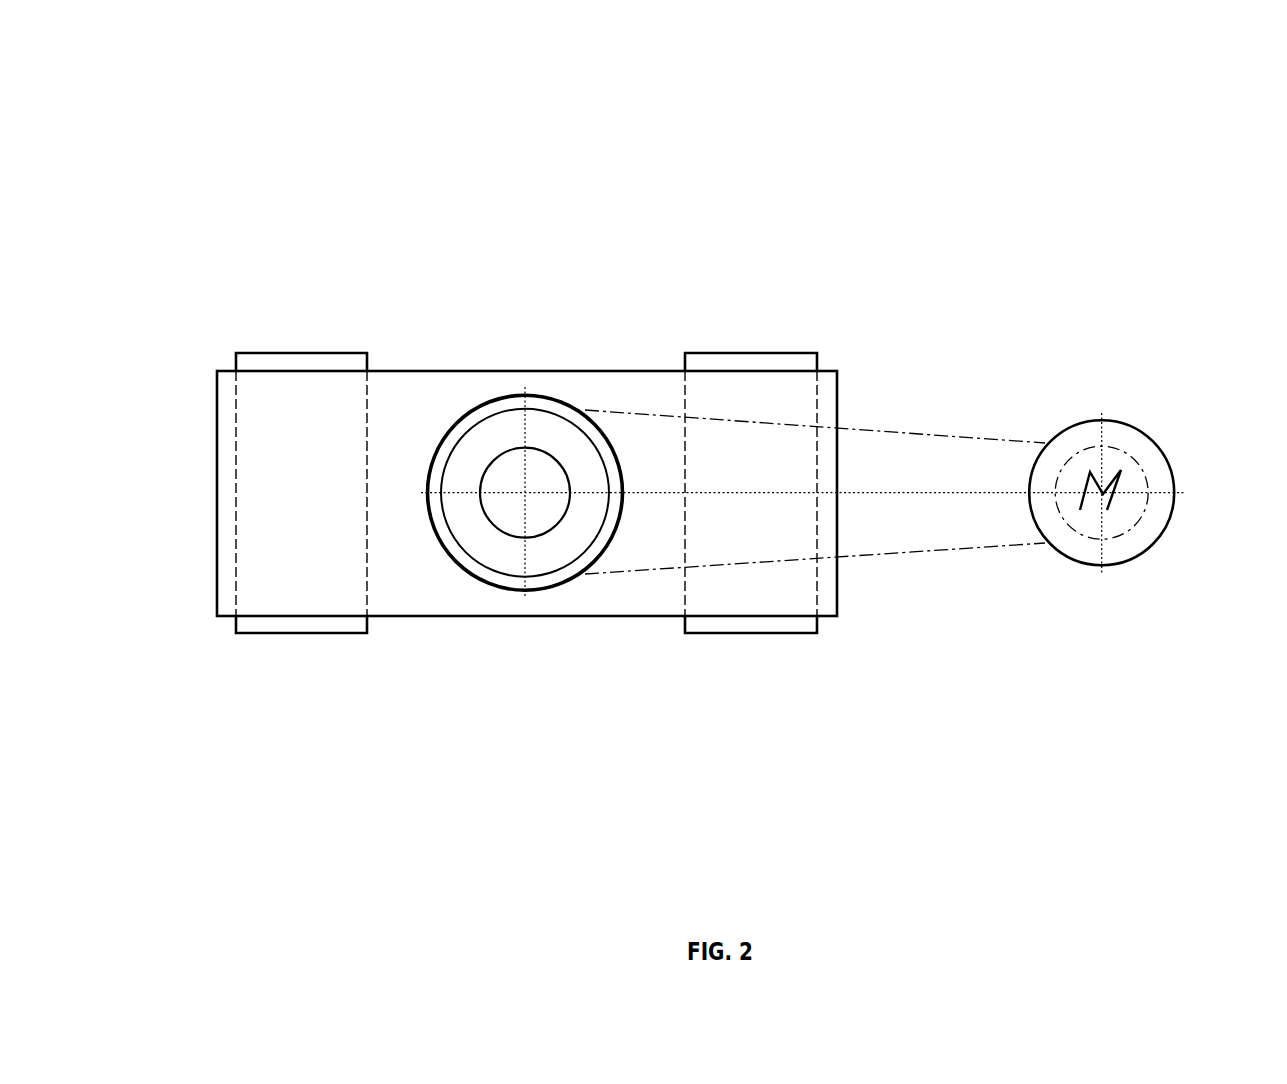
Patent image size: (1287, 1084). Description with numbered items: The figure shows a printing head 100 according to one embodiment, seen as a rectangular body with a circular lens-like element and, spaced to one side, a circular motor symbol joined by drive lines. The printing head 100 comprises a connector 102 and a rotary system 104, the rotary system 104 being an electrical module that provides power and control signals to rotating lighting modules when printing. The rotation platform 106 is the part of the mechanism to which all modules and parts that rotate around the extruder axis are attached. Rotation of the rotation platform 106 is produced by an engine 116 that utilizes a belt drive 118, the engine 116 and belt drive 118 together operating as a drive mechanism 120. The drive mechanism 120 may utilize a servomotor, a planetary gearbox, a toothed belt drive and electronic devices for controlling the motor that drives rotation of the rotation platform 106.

The printing head 100 is at (910, 93).
The connector 102 is at (500, 522).
The rotary system 104 is at (473, 410).
The rotation platform 106 is at (216, 393).
The engine 116 is at (1163, 451).
The belt drive 118 is at (937, 434).
The drive mechanism 120 is at (1090, 540).